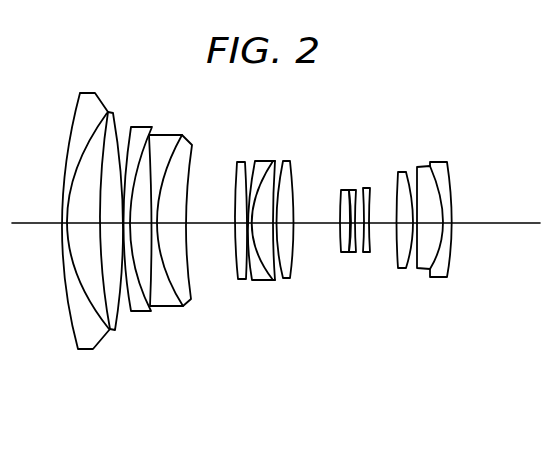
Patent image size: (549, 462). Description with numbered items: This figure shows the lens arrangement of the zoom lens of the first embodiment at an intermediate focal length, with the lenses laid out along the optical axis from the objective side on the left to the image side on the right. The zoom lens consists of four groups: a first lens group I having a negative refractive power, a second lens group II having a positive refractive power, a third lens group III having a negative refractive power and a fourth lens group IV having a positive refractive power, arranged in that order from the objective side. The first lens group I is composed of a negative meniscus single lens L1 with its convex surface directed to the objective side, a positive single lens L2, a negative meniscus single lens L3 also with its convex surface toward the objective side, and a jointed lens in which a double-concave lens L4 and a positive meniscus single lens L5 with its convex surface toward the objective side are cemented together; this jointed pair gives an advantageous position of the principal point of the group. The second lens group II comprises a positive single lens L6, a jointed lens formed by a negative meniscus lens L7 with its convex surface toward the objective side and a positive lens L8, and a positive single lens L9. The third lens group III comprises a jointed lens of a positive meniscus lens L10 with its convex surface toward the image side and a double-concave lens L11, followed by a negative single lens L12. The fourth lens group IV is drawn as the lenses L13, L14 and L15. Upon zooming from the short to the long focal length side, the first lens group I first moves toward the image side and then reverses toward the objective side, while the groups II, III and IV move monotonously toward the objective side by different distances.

The negative meniscus single lens L1 is at (87, 352).
The positive single lens L2 is at (113, 332).
The negative meniscus single lens L3 is at (142, 313).
The double-concave lens L4 is at (167, 308).
The positive meniscus single lens L5 is at (192, 249).
The positive single lens L6 is at (240, 280).
The negative meniscus lens L7 is at (256, 282).
The positive lens L8 is at (272, 282).
The positive single lens L9 is at (293, 251).
The positive meniscus lens L10 is at (343, 253).
The double-concave lens L11 is at (350, 253).
The negative single lens L12 is at (378, 241).
The thirteenth lens (fourth lens group) L13 is at (400, 270).
The fourteenth lens (fourth lens group) L14 is at (421, 270).
The fifteenth lens (fourth lens group) L15 is at (455, 244).
The first lens group I is at (132, 261).
The second lens group II is at (261, 271).
The third lens group III is at (353, 273).
The fourth lens group IV is at (439, 270).